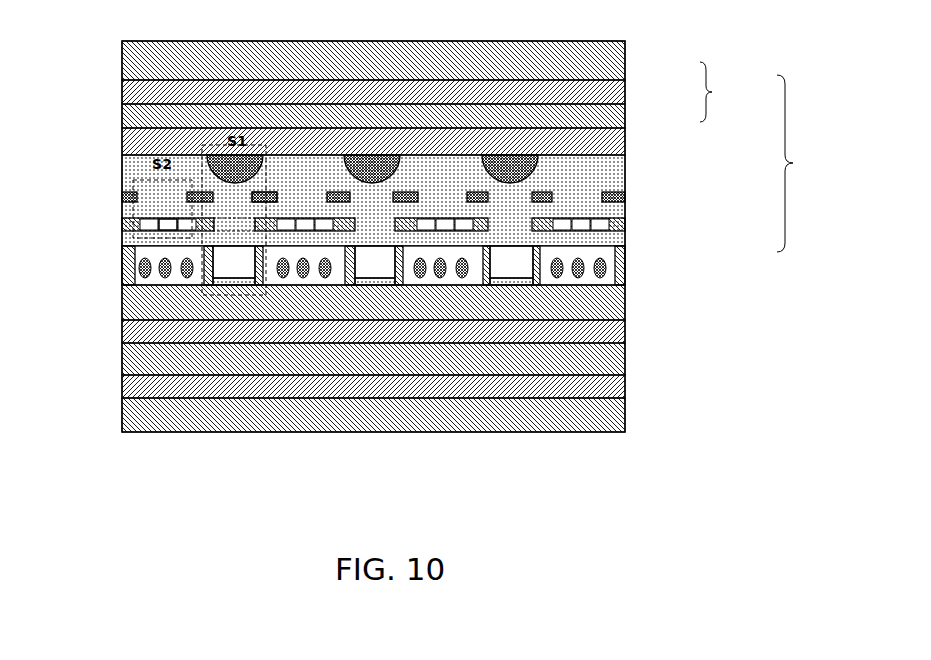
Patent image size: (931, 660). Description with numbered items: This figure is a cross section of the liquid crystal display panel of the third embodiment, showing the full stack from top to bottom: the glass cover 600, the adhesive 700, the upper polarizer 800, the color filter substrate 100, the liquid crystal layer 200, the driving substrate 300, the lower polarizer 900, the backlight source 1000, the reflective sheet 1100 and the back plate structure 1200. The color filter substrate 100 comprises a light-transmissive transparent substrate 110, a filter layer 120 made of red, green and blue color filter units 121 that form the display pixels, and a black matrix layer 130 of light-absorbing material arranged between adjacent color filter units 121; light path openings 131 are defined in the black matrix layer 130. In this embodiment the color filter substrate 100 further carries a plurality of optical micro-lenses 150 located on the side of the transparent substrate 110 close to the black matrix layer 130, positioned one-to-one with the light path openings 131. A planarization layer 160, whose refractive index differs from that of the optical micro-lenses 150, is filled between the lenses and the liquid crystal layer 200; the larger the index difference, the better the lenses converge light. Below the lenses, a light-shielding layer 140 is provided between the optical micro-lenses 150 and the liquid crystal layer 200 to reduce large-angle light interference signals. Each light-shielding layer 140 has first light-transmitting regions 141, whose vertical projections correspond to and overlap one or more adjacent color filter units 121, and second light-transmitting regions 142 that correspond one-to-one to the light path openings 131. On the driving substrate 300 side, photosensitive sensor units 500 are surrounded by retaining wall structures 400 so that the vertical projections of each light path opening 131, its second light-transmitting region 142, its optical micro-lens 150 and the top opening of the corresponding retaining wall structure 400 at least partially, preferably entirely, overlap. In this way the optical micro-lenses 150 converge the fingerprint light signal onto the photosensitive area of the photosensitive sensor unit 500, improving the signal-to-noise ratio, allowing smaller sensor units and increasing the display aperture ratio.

The color filter substrate 100 is at (793, 163).
The transparent substrate 110 is at (625, 142).
The filter layer 120 is at (712, 92).
The color filter units 121 is at (427, 213).
The black matrix layer 130 is at (625, 228).
The light path openings 131 is at (228, 227).
The light-shielding layer 140 is at (625, 203).
The first light-transmitting regions 141 is at (165, 198).
The second light-transmitting regions 142 is at (245, 200).
The optical micro-lenses 150 is at (538, 163).
The planarization layer 160 is at (625, 187).
The liquid crystal layer 200 is at (123, 272).
The driving substrate 300 is at (123, 310).
The retaining wall structures 400 is at (543, 268).
The photosensitive sensor units 500 is at (517, 283).
The glass cover 600 is at (133, 60).
The adhesive 700 is at (133, 95).
The upper polarizer 800 is at (133, 115).
The lower polarizer 900 is at (123, 340).
The backlight source 1000 is at (123, 366).
The reflective sheet 1100 is at (123, 398).
The back plate structure 1200 is at (123, 420).